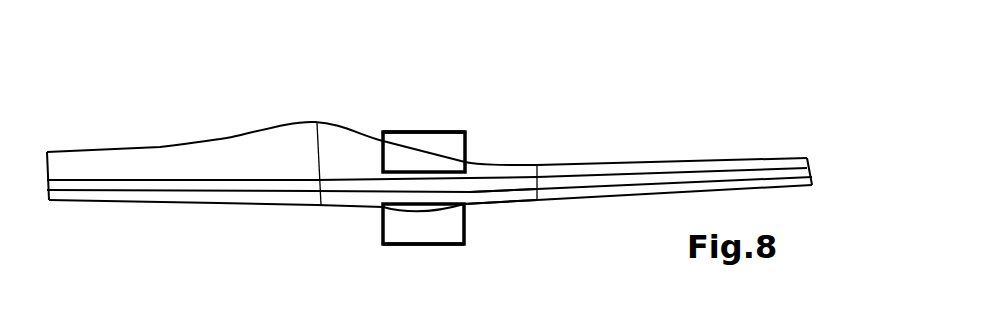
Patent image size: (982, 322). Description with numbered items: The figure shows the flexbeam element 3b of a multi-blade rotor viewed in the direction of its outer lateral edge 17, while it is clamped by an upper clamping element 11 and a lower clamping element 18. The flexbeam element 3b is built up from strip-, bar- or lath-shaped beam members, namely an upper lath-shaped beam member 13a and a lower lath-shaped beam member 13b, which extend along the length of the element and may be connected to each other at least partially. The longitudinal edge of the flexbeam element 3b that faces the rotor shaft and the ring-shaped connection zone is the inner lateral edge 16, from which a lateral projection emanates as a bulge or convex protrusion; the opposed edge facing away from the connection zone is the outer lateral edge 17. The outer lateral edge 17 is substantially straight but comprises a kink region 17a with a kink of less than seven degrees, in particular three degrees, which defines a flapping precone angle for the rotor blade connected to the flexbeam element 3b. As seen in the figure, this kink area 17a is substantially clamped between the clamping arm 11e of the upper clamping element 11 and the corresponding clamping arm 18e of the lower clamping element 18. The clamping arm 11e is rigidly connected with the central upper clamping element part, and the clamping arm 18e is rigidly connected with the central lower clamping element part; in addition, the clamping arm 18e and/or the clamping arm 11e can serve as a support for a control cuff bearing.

The flexbeam element 3b is at (775, 162).
The upper clamping element 11 is at (422, 125).
The clamping arm 11e is at (447, 130).
The upper lath-shaped beam member 13a is at (93, 168).
The lower lath-shaped beam member 13b is at (80, 198).
The inner lateral edge 16 is at (232, 133).
The outer lateral edge 17 is at (218, 209).
The kink region 17a is at (472, 198).
The lower clamping element 18 is at (393, 252).
The clamping arm 18e is at (438, 246).